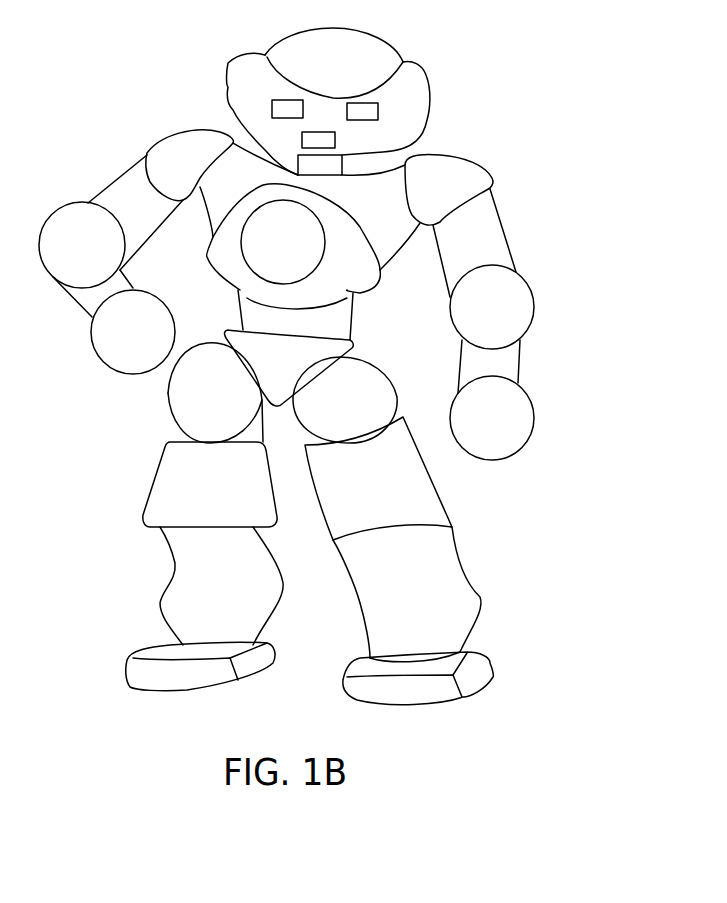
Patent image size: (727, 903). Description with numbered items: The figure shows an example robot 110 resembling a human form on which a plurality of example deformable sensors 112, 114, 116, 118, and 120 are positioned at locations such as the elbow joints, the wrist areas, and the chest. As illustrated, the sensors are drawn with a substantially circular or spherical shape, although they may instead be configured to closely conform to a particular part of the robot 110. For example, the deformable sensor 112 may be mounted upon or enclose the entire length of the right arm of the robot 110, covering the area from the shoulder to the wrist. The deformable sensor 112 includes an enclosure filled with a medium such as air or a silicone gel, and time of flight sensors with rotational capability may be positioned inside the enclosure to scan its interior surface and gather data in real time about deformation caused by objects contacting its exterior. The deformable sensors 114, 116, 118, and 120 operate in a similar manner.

The robot 110 is at (309, 358).
The deformable sensor 112 is at (74, 203).
The deformable sensor 114 is at (535, 305).
The deformable sensor 116 is at (303, 247).
The deformable sensor 118 is at (535, 424).
The deformable sensor 120 is at (91, 333).